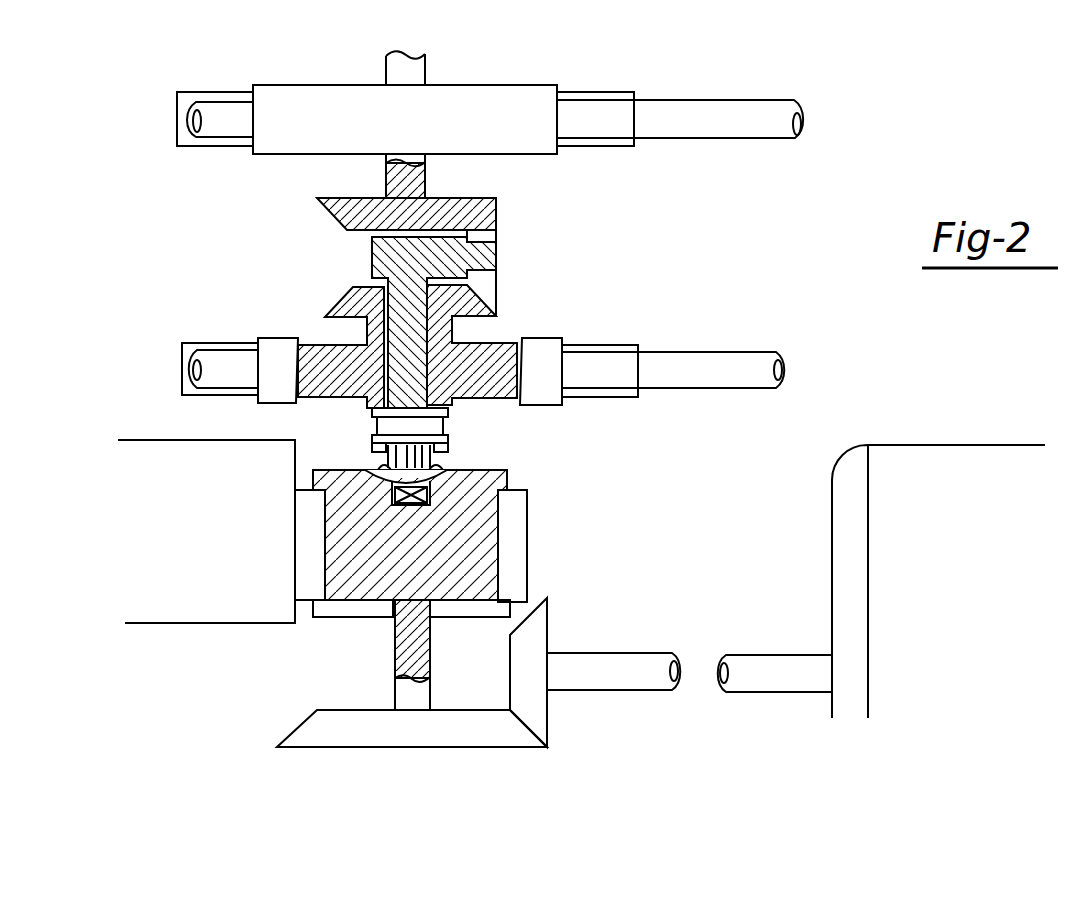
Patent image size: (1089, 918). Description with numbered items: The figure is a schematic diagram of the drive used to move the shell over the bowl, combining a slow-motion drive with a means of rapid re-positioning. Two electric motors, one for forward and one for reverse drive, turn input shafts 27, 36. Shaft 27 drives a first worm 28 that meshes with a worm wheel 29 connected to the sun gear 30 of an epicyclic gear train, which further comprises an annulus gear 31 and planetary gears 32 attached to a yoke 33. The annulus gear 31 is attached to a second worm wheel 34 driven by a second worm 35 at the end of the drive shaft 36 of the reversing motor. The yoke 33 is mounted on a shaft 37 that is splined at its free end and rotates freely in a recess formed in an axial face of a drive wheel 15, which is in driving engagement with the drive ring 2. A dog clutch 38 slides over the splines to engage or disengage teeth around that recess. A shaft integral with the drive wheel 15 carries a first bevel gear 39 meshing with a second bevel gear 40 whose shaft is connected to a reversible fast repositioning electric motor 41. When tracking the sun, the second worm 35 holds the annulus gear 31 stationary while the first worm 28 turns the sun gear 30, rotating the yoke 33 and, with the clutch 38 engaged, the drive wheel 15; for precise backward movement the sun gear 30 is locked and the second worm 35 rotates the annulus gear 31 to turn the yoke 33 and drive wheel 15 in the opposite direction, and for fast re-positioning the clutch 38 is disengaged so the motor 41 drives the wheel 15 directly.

The drive ring 2 is at (225, 541).
The drive wheel 15 is at (512, 542).
The input shaft 27 is at (765, 130).
The first worm 28 is at (386, 134).
The worm wheel 29 is at (187, 146).
The sun gear 30 is at (338, 208).
The annulus gear 31 is at (348, 301).
The planetary gears 32 is at (490, 234).
The yoke 33 is at (392, 260).
The second worm wheel 34 is at (196, 343).
The second worm 35 is at (277, 397).
The drive shaft 36 is at (740, 358).
The shaft 37 is at (416, 339).
The dog clutch 38 is at (433, 427).
The first bevel gear 39 is at (343, 716).
The second bevel gear 40 is at (527, 668).
The repositioning electric motor 41 is at (932, 570).